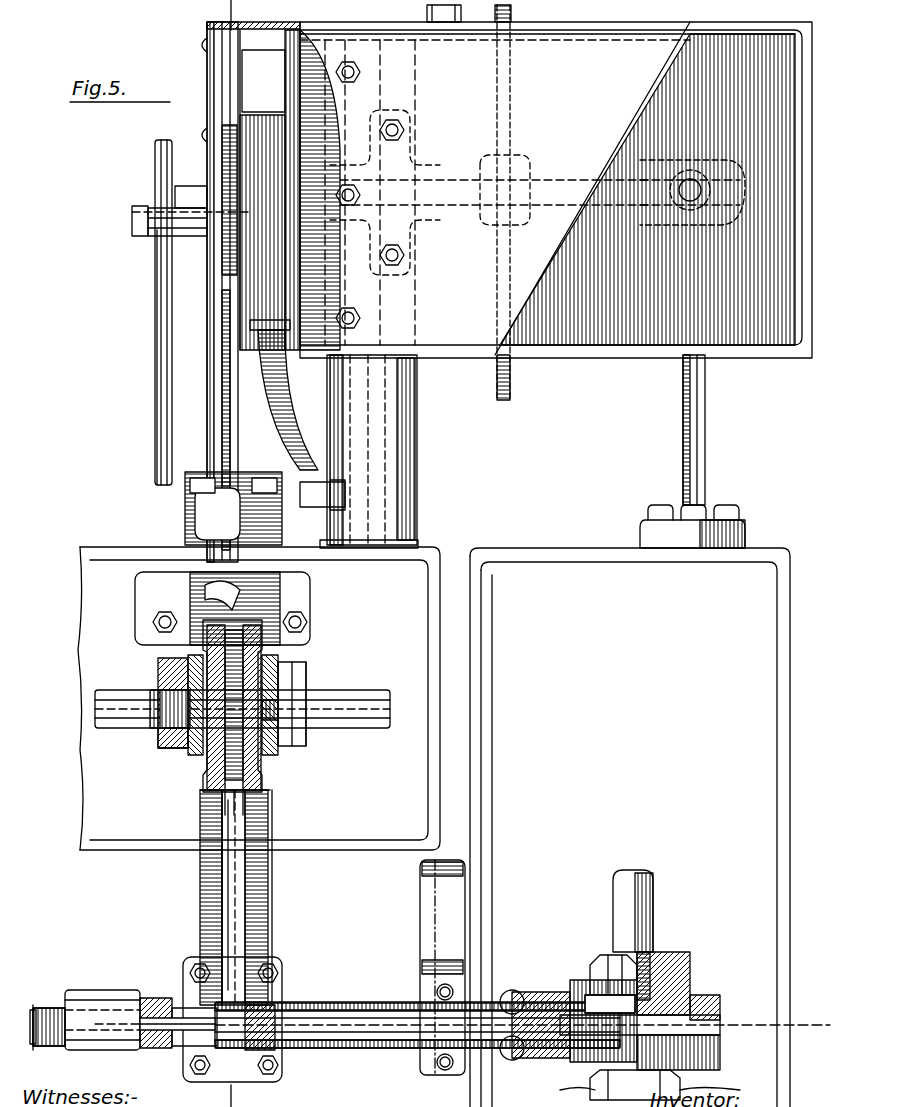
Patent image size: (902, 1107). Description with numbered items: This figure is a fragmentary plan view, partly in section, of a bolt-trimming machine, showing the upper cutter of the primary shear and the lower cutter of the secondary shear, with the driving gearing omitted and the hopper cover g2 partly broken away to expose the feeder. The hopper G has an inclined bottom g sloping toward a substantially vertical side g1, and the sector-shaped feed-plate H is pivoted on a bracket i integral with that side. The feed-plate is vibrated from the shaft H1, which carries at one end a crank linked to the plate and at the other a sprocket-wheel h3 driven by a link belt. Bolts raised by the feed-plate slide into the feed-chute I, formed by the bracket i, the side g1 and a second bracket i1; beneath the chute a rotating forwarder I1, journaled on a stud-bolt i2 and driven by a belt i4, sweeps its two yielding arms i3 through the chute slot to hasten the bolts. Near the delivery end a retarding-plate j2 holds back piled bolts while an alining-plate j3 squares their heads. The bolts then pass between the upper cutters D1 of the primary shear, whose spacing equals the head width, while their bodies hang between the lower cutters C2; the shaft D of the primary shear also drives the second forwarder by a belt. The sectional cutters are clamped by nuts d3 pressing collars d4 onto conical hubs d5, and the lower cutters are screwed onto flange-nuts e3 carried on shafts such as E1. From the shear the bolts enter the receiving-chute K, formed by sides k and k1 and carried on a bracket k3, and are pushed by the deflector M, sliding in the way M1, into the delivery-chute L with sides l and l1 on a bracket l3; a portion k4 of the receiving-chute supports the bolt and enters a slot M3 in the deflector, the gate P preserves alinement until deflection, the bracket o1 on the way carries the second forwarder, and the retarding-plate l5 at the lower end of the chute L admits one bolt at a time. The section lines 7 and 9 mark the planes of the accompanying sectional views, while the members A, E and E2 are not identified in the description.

The section line 7 is at (231, 14).
The inclined bottom g is at (647, 189).
The side of hopper g1 is at (290, 190).
The cover g2 is at (509, 181).
The sector-shaped feed-plate H is at (369, 404).
The shaft H1 is at (445, 192).
The sprocket-wheel h3 is at (510, 378).
The hopper G is at (745, 355).
The feed-chute I is at (207, 106).
The rotating forwarder I1 is at (172, 182).
The bracket i is at (248, 433).
The bracket i1 is at (222, 433).
The stud-bolt i2 is at (132, 222).
The yielding arms i3 is at (225, 300).
The belt i4 is at (165, 316).
The retarding-plate j2 is at (200, 522).
The alining-plate j3 is at (185, 588).
The main frame A is at (434, 827).
The shaft D is at (338, 700).
The cutters D1 is at (263, 770).
The nuts d3 is at (162, 672).
The collars d4 is at (278, 658).
The conical hubs d5 is at (185, 752).
The cutters C2 is at (210, 795).
The receiving-chute K is at (190, 920).
The side k is at (203, 890).
The side k1 is at (268, 890).
The bracket k3 is at (268, 935).
The portion of receiving-chute k4 is at (218, 1082).
The delivery-chute L is at (330, 992).
The side l is at (350, 1048).
The side l1 is at (360, 1003).
The bracket l3 is at (425, 920).
The retarding-plate l5 is at (512, 990).
The gate P is at (288, 1048).
The deflector M is at (172, 1000).
The way M1 is at (45, 1048).
The slot M3 is at (34, 1005).
The bracket o1 is at (100, 990).
The section line 9 is at (457, 1025).
The crank E is at (590, 1000).
The shaft E1 is at (653, 900).
The crank disk E2 is at (720, 1020).
The flange-nuts e3 is at (705, 955).